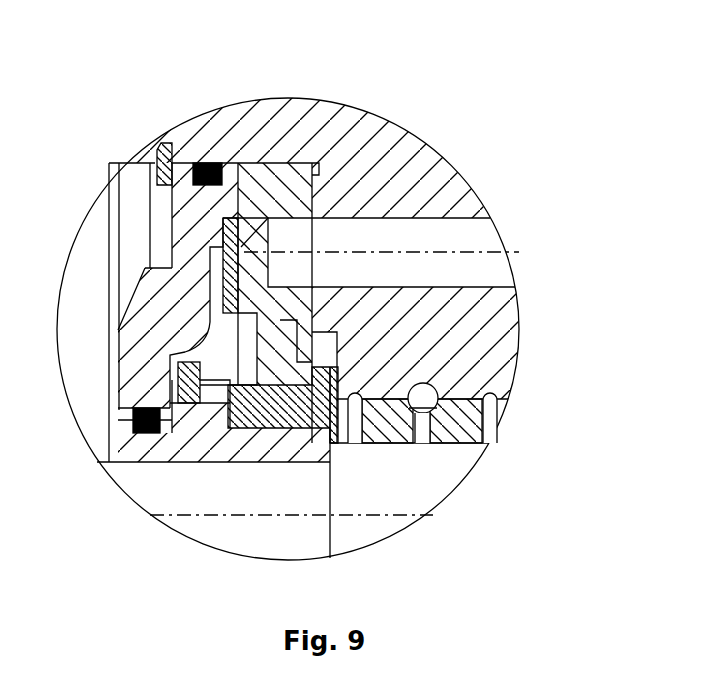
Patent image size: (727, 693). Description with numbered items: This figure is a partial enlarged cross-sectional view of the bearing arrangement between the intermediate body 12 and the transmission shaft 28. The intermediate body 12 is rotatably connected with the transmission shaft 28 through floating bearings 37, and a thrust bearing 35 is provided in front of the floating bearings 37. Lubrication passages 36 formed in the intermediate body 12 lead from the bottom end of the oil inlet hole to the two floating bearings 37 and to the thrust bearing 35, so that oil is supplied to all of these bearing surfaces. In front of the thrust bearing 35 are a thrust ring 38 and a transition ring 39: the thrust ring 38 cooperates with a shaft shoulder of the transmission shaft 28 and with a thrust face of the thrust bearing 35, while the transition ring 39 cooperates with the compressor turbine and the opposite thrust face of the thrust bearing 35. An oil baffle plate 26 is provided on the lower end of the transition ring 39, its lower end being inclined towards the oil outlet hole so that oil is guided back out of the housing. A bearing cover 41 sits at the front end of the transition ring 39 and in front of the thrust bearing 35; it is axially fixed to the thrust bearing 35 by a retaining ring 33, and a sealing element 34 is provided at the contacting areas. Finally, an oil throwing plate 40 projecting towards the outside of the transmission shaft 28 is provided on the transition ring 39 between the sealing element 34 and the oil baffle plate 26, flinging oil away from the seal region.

The intermediate body 12 is at (393, 180).
The oil baffle plate 26 is at (244, 255).
The transmission shaft 28 is at (458, 458).
The retaining ring 33 is at (167, 143).
The sealing element 34 is at (208, 163).
The thrust bearing 35 is at (318, 170).
The lubrication passages 36 is at (458, 352).
The floating bearings 37 is at (401, 443).
The thrust ring 38 is at (320, 465).
The transition ring 39 is at (209, 433).
The oil throwing plate 40 is at (175, 403).
The bearing cover 41 is at (122, 420).